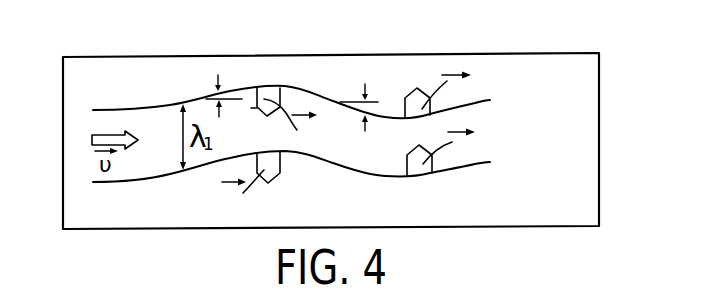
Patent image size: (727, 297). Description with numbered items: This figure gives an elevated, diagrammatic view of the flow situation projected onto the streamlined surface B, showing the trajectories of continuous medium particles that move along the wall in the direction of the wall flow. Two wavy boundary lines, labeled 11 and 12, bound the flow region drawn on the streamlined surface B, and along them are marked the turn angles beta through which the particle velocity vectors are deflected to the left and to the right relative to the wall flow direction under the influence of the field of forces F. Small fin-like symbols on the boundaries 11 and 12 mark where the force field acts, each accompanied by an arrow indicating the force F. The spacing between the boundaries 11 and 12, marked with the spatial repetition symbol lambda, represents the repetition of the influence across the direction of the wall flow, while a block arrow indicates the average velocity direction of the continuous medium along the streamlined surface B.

The streamlined surface B is at (103, 88).
The first wall (upper wavy wall) 1_1 11 is at (305, 90).
The second wall (lower wavy wall) 1_2 12 is at (293, 153).